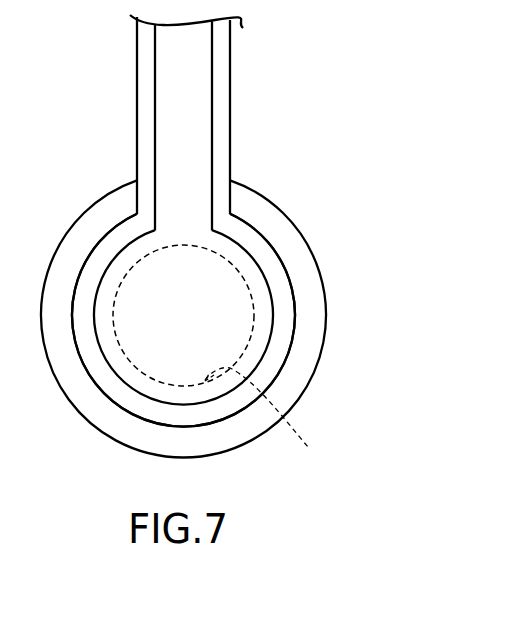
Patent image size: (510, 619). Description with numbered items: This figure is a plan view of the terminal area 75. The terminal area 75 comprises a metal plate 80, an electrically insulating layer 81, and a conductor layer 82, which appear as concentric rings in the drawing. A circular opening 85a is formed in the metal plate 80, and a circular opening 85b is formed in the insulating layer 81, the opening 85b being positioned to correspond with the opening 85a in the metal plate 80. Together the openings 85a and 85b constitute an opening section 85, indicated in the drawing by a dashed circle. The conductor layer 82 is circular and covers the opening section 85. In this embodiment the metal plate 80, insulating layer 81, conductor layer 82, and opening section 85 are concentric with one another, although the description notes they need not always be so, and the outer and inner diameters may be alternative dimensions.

The terminal area 75 is at (217, 257).
The metal plate 80 is at (305, 273).
The electrically insulating layer 81 is at (264, 255).
The conductor layer 82 is at (223, 331).
The opening section 85 is at (299, 434).
The circular opening 85a is at (278, 413).
The circular opening 85b is at (305, 456).